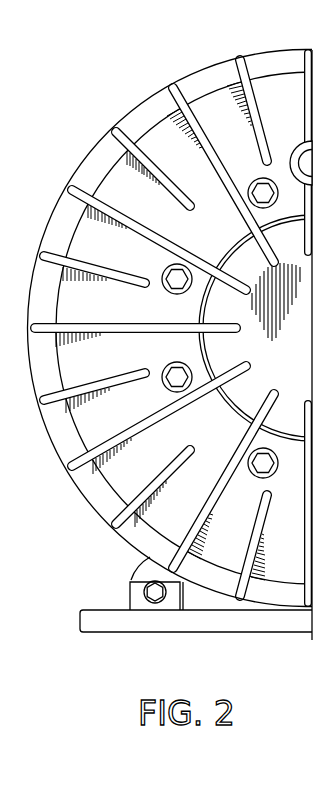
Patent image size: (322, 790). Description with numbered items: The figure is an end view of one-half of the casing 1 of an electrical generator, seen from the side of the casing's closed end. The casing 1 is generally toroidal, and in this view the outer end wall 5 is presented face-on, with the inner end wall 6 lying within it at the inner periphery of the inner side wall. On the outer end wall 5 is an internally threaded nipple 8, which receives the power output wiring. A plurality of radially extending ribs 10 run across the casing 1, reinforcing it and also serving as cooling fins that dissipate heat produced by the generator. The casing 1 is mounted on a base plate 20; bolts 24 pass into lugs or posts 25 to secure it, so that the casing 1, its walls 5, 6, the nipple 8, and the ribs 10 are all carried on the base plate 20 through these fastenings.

The casing 1 is at (135, 88).
The outer end wall 5 is at (184, 345).
The inner end wall 6 is at (294, 353).
The internally threaded nipple 8 is at (300, 152).
The radially extending ribs 10 is at (112, 134).
The base plate 20 is at (285, 631).
The bolts 24 is at (130, 589).
The lugs or posts 25 is at (131, 580).